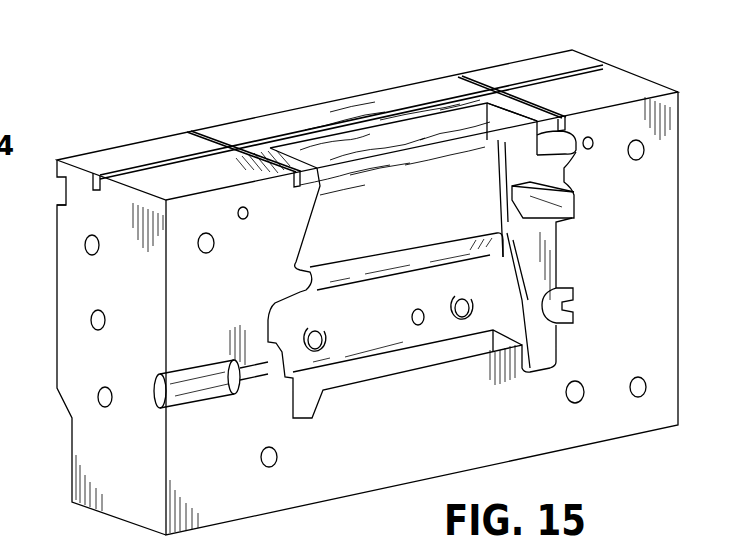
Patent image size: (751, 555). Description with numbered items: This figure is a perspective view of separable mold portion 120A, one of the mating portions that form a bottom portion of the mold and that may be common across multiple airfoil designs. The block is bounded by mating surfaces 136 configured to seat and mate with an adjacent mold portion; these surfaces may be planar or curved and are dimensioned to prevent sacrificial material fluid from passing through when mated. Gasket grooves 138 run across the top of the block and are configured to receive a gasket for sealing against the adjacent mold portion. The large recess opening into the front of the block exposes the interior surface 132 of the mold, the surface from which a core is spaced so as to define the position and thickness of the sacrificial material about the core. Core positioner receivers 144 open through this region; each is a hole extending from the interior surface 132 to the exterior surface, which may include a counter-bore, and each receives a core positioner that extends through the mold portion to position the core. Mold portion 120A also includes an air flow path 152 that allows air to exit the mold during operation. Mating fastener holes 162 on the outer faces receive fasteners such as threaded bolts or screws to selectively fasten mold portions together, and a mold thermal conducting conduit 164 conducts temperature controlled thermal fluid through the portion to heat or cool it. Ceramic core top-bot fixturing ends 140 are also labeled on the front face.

The separable mold portion 120A is at (507, 77).
The interior surface 132 is at (410, 148).
The mating surfaces 136 is at (262, 291).
The gasket grooves 138 is at (243, 150).
The ceramic core top-bot fixturing ends 140 is at (353, 449).
The core positioner receiver 144 is at (156, 388).
The air flow path 152 is at (578, 140).
The mating fastener holes 162 is at (205, 240).
The mold thermal conducting conduit 164 is at (577, 398).